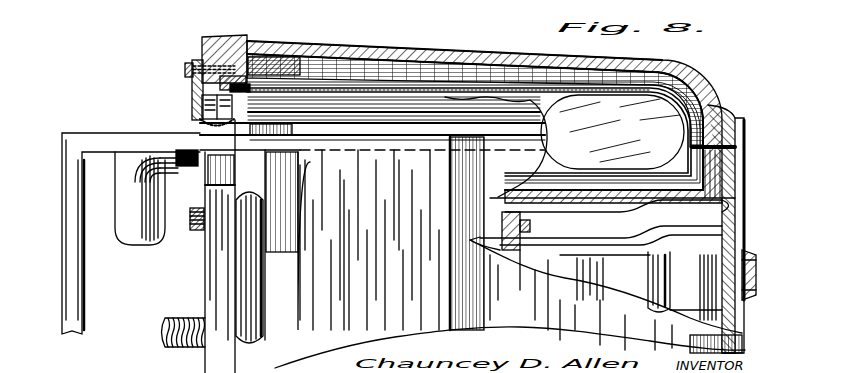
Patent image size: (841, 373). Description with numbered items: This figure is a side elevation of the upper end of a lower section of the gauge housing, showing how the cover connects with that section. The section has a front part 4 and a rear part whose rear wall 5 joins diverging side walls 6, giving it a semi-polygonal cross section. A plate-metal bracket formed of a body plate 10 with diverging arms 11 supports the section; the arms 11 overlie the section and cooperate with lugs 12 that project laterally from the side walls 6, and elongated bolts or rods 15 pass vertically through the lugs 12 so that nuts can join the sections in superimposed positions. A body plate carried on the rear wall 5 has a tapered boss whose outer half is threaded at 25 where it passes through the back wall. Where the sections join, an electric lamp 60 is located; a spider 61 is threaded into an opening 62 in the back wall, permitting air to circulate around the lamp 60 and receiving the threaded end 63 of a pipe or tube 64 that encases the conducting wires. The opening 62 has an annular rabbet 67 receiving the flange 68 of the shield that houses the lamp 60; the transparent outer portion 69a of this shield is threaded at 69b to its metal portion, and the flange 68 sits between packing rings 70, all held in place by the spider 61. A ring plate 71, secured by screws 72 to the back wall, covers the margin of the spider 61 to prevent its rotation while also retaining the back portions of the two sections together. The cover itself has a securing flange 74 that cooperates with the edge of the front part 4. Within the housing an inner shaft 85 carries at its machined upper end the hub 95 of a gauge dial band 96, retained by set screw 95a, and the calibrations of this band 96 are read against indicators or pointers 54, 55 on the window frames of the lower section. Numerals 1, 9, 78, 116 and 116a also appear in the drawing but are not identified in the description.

The body 1 is at (472, 232).
The front part 4 is at (651, 326).
The rear wall 5 is at (204, 287).
The diverging side walls 6 is at (429, 233).
The arm 9 is at (76, 250).
The body plate 10 is at (76, 203).
The diverging arms 11 is at (152, 143).
The lugs 12 is at (268, 173).
The elongated bolts or rods 15 is at (255, 260).
The threaded portion of boss 25 is at (184, 350).
The indicator or pointer 54 is at (736, 216).
The indicator or pointer 55 is at (742, 256).
The electric lamp 60 is at (612, 132).
The spider 61 is at (394, 107).
The opening 62 is at (213, 37).
The threaded end 63 is at (206, 118).
The pipe or tube 64 is at (156, 197).
The annular rabbet 67 is at (280, 52).
The flange 68 is at (236, 84).
The outer portion of shield 69a is at (690, 82).
The threaded connection of shield 69b is at (488, 95).
The packing rings 70 is at (229, 76).
The ring plate 71 is at (196, 60).
The screws 72 is at (186, 67).
The securing flange 74 is at (742, 120).
The cover plate 78 is at (483, 52).
The inner shaft 85 is at (500, 250).
The hub 95 is at (512, 218).
The set screw 95a is at (533, 229).
The gauge dial band 96 is at (675, 245).
The ring 116 is at (650, 286).
The ring portion 116a is at (742, 282).